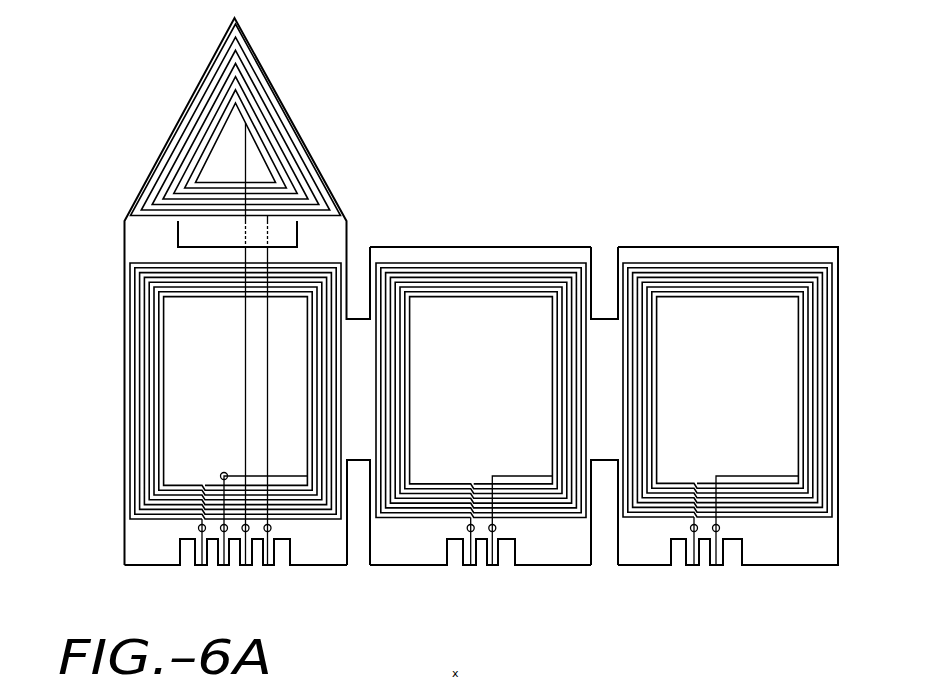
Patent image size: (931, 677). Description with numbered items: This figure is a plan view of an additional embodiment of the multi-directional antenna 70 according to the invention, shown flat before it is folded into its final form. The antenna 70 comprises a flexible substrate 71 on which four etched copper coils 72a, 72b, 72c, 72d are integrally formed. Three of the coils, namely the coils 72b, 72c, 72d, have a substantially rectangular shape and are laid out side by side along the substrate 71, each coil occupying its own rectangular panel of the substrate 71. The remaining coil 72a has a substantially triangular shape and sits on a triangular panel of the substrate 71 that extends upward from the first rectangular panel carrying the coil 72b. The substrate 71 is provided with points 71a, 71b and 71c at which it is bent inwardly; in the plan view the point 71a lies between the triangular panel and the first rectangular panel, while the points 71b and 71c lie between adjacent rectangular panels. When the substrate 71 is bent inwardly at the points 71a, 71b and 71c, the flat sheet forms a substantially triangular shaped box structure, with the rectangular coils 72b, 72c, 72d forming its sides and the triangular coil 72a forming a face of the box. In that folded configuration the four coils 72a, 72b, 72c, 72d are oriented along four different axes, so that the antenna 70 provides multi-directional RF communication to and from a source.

The antenna 70 is at (381, 176).
The flexible substrate 71 is at (125, 289).
The bend point 71a is at (178, 242).
The bend point 71b is at (360, 466).
The bend point 71c is at (607, 466).
The etched copper coil 72a is at (207, 90).
The etched copper coil 72b is at (130, 423).
The etched copper coil 72c is at (452, 262).
The etched copper coil 72d is at (681, 262).